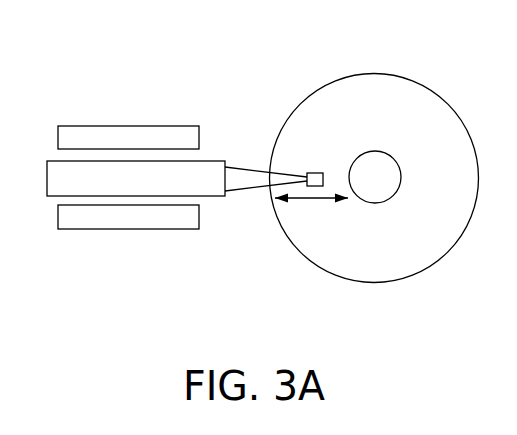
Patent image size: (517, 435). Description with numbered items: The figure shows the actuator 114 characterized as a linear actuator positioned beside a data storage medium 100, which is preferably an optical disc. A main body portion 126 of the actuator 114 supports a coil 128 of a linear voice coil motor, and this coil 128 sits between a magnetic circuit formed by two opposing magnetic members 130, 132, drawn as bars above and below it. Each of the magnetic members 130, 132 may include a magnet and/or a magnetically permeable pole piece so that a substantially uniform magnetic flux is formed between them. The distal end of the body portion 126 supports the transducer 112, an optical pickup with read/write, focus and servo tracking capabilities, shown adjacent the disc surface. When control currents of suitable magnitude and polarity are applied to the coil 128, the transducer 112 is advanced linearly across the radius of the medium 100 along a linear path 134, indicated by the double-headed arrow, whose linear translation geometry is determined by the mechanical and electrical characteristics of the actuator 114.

The data storage medium 100 is at (461, 194).
The transducer 112 is at (313, 172).
The actuator 114 is at (206, 57).
The main body portion 126 is at (242, 160).
The coil 128 is at (53, 180).
The magnetic member 130 is at (128, 131).
The magnetic member 132 is at (133, 225).
The linear path 134 is at (309, 200).